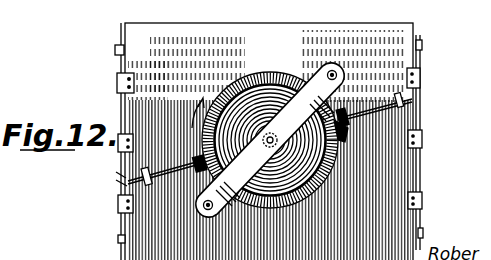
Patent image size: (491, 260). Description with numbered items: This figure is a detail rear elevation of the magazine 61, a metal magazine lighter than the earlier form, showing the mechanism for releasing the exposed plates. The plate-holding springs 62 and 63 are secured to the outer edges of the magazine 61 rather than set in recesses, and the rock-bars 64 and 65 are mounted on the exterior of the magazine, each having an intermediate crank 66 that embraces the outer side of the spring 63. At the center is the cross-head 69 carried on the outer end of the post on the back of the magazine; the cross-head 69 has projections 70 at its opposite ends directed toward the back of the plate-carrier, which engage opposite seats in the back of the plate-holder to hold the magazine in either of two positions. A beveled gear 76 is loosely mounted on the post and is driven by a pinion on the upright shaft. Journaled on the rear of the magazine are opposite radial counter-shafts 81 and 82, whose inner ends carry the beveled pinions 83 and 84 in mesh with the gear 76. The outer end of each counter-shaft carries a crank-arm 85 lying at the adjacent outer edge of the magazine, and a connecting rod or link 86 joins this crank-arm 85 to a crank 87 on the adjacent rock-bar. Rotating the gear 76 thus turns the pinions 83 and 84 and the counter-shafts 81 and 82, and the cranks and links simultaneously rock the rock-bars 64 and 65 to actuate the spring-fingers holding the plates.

The magazine 61 is at (394, 27).
The spring 62 is at (421, 78).
The spring 63 is at (423, 143).
The rock-bar 64 is at (421, 178).
The rock-bar 65 is at (124, 65).
The intermediate crank 66 is at (118, 153).
The cross-head 69 is at (293, 117).
The projections 70 is at (333, 70).
The beveled gear 76 is at (312, 192).
The counter-shaft 81 is at (164, 162).
The counter-shaft 82 is at (366, 125).
The beveled pinion 83 is at (198, 172).
The beveled pinion 84 is at (346, 130).
The crank-arm 85 is at (421, 108).
The connecting rod or link 86 is at (118, 184).
The crank 87 is at (118, 176).